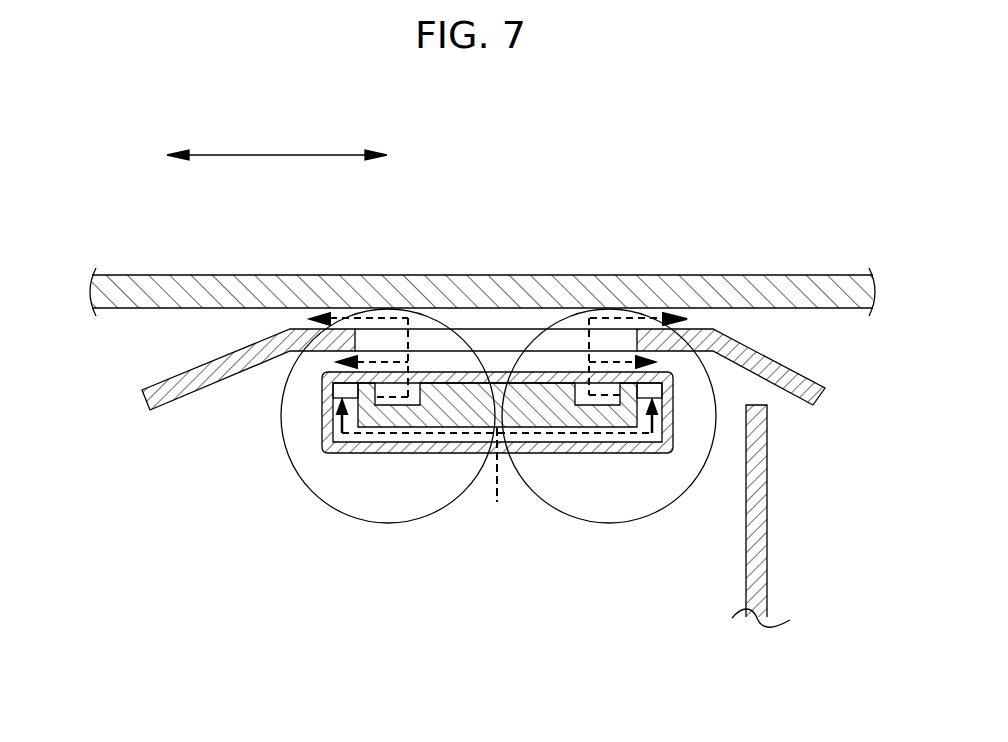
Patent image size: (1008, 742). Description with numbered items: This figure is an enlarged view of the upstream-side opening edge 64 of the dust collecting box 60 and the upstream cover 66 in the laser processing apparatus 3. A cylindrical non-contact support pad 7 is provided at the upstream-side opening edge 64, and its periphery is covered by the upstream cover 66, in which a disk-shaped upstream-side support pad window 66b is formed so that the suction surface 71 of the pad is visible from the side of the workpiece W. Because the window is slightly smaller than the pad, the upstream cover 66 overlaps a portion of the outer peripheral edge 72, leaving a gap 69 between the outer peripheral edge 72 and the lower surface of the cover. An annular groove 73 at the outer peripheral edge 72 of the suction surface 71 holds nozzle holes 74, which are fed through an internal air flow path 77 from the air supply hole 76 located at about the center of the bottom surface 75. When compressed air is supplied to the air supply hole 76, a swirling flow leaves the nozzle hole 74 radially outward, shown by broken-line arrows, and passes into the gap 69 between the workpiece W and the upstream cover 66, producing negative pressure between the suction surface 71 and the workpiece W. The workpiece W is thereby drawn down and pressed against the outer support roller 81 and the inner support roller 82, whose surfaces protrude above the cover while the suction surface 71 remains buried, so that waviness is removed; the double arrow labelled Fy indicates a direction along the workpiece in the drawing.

The laser processing apparatus 3 is at (839, 142).
The non-contact support pad 7 is at (462, 396).
The dust collecting box 60 is at (767, 527).
The upstream-side opening edge 64 is at (525, 200).
The upstream cover 66 is at (148, 402).
The upstream-side support pad window 66b is at (357, 344).
The gap 69 is at (322, 350).
The suction surface 71 is at (545, 383).
The outer peripheral edge 72 is at (645, 377).
The annular groove 73 is at (417, 405).
The nozzle hole 74 is at (357, 397).
The bottom surface 75 is at (458, 453).
The air supply hole 76 is at (517, 484).
The air flow path 77 is at (563, 433).
The outer support roller 81 is at (395, 515).
The inner support roller 82 is at (620, 515).
The workpiece W is at (757, 275).
The force in Y direction Fy is at (320, 155).